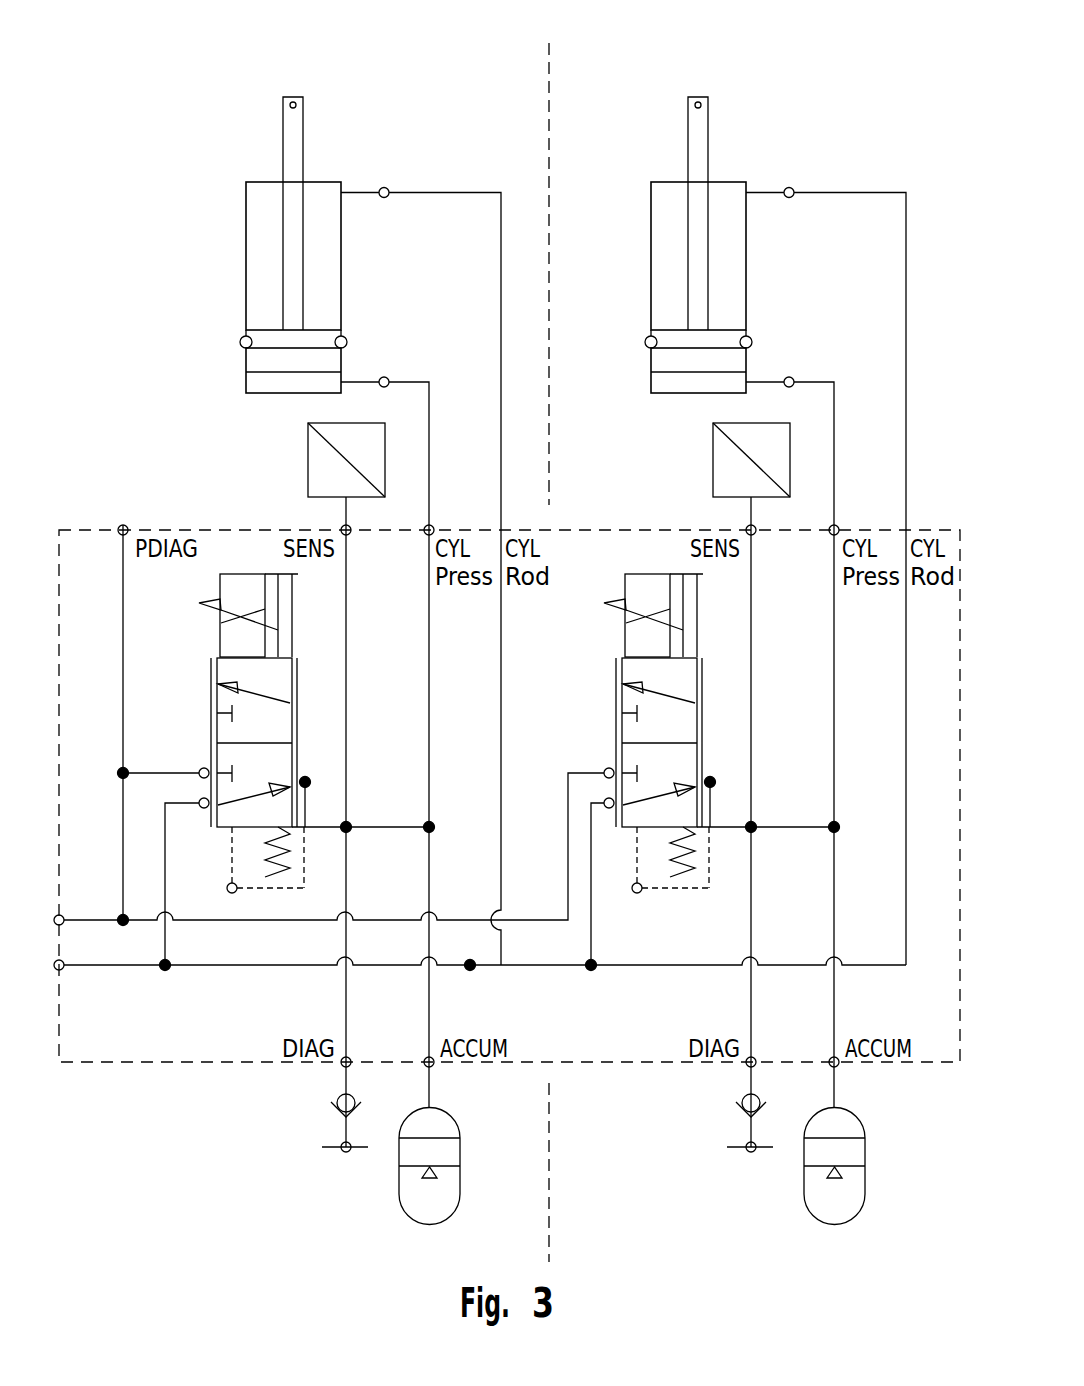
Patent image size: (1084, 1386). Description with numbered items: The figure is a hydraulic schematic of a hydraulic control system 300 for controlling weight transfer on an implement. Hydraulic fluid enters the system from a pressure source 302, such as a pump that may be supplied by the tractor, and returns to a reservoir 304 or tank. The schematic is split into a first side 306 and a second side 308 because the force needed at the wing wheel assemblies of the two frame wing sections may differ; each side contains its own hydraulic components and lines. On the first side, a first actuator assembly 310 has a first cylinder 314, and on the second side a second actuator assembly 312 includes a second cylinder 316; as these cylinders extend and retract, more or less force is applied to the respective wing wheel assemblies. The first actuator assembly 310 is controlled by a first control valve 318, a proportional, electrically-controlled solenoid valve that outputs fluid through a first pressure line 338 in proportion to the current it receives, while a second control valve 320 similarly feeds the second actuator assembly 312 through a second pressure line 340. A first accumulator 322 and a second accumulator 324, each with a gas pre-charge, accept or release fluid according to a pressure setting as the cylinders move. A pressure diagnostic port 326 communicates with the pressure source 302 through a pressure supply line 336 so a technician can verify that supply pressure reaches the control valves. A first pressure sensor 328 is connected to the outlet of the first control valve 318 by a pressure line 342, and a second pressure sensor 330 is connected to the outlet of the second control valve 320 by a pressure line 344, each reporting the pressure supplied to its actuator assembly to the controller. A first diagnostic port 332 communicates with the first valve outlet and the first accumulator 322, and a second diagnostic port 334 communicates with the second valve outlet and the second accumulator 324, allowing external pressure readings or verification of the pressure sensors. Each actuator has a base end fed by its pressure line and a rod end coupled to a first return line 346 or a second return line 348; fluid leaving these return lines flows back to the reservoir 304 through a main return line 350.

The hydraulic control system 300 is at (128, 147).
The pressure source 302 is at (56, 916).
The reservoir 304 is at (62, 970).
The first side 306 is at (345, 112).
The second side 308 is at (750, 115).
The first actuator assembly 310 is at (233, 295).
The second actuator assembly 312 is at (643, 205).
The first cylinder 314 is at (293, 224).
The second cylinder 316 is at (699, 224).
The first control valve 318 is at (310, 676).
The second control valve 320 is at (715, 676).
The first accumulator 322 is at (399, 1182).
The second accumulator 324 is at (804, 1182).
The pressure diagnostic port 326 is at (123, 525).
The first pressure sensor 328 is at (340, 527).
The second pressure sensor 330 is at (745, 527).
The first diagnostic port 332 is at (342, 1065).
The second diagnostic port 334 is at (747, 1065).
The pressure supply line 336 is at (99, 919).
The first pressure line 338 is at (409, 382).
The second pressure line 340 is at (814, 380).
The pressure line 342 is at (346, 697).
The pressure line 344 is at (751, 698).
The first return line 346 is at (407, 192).
The second return line 348 is at (838, 192).
The main return line 350 is at (145, 965).